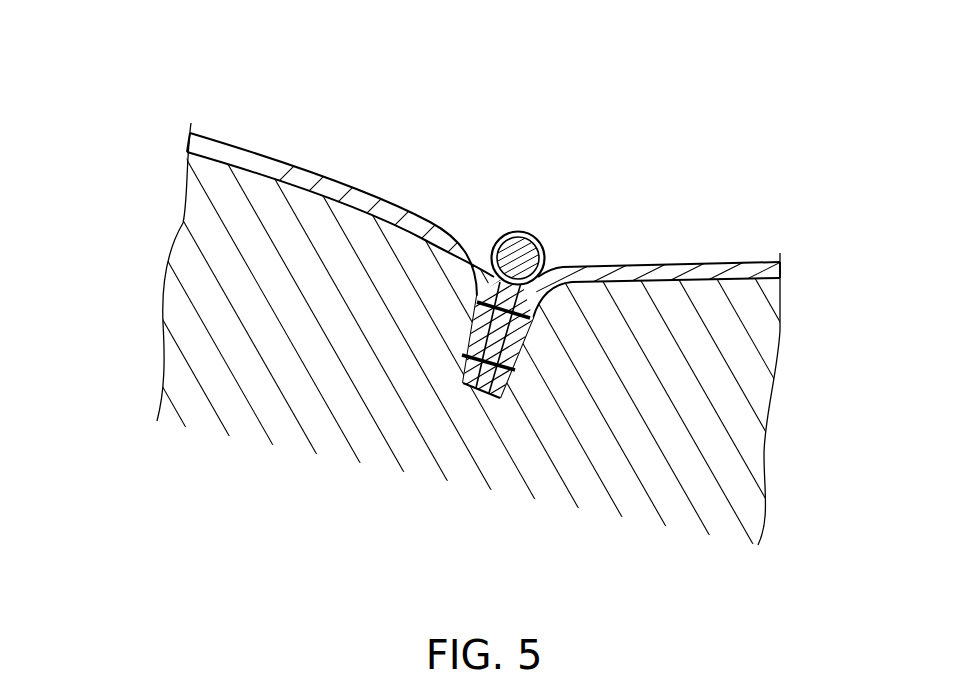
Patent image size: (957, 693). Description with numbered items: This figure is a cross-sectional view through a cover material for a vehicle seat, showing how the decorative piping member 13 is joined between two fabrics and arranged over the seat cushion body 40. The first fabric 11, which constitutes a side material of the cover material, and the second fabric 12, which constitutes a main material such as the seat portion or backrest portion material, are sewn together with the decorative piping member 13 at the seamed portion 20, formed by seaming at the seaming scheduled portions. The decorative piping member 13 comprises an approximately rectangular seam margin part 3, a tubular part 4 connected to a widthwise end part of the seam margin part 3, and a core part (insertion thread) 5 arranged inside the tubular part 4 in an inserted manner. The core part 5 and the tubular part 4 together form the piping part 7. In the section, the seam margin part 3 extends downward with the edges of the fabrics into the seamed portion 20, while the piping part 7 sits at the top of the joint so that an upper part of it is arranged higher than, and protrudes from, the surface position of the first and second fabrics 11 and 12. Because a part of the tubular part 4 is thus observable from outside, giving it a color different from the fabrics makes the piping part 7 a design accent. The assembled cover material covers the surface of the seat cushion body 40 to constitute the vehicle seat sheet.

The seam margin part 3 is at (487, 403).
The tubular part 4 is at (512, 233).
The core part (insertion thread) 5 is at (520, 256).
The piping part 7 is at (559, 221).
The first fabric 11 is at (310, 170).
The second fabric 12 is at (722, 268).
The decorative piping member 13 is at (475, 320).
The seamed portion 20 is at (506, 392).
The seat cushion body 40 is at (228, 343).